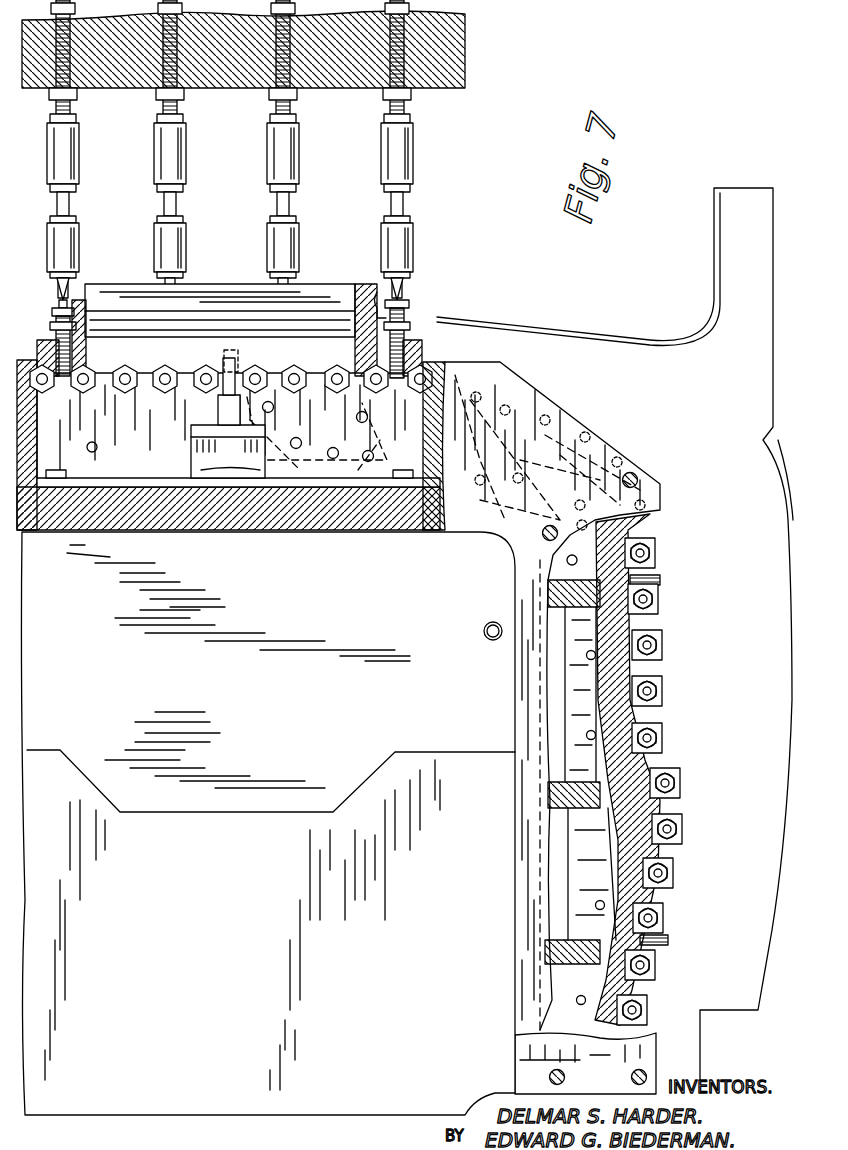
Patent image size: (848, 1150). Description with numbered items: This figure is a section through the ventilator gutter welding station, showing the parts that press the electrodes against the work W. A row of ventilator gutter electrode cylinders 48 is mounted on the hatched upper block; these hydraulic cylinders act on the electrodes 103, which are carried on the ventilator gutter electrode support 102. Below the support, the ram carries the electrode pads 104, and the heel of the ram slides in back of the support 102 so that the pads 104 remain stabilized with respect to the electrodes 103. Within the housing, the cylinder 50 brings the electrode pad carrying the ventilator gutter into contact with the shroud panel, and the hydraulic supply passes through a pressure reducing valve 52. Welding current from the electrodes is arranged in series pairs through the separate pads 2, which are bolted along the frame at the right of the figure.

The pads 2 is at (665, 692).
The ventilator gutter electrode cylinders 48 is at (72, 152).
The cylinder 50 is at (192, 450).
The pressure reducing valve 52 is at (148, 385).
The ventilator gutter electrode support 102 is at (170, 167).
The electrodes 103 is at (60, 290).
The electrode pads 104 is at (57, 305).
The work W is at (412, 287).